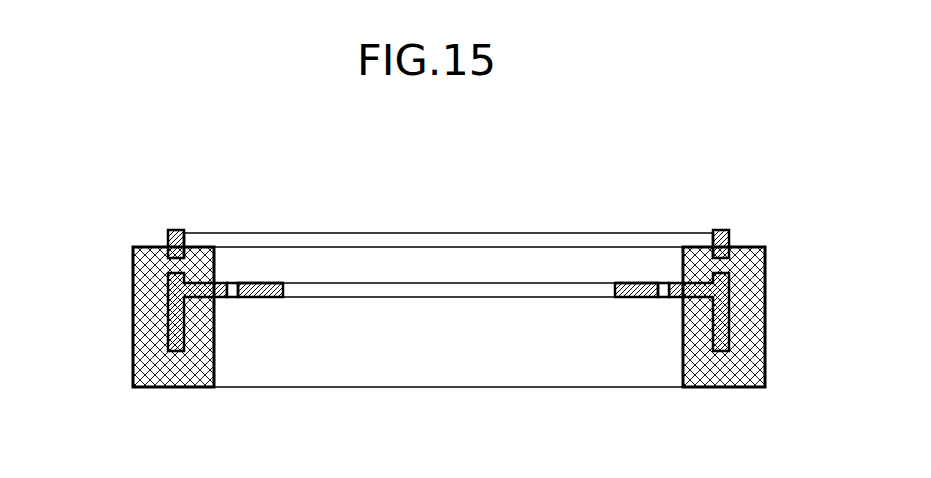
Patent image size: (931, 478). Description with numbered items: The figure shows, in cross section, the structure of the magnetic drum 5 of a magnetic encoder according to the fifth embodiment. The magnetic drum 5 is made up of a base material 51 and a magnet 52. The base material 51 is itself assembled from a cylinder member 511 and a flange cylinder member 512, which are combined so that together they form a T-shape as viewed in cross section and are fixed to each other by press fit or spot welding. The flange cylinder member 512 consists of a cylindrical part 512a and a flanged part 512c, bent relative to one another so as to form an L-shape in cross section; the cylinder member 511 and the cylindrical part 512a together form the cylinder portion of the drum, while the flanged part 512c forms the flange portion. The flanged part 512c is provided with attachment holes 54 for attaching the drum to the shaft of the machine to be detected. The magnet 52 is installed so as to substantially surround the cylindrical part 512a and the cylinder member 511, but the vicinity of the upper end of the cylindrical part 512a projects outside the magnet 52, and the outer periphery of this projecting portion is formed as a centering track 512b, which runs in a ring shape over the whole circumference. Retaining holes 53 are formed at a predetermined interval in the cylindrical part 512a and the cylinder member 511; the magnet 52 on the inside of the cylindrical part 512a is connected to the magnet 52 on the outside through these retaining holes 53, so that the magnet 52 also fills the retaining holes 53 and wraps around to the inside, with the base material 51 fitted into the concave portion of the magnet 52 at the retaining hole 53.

The magnetic drum 5 is at (417, 186).
The base material 51 is at (284, 214).
The cylinder member 511 is at (173, 322).
The flange cylinder member 512 is at (289, 273).
The cylindrical part 512a is at (186, 240).
The centering track 512b is at (167, 238).
The flanged part 512c is at (272, 298).
The magnet 52 is at (178, 377).
The retaining hole 53 is at (179, 274).
The attachment hole 54 is at (233, 284).